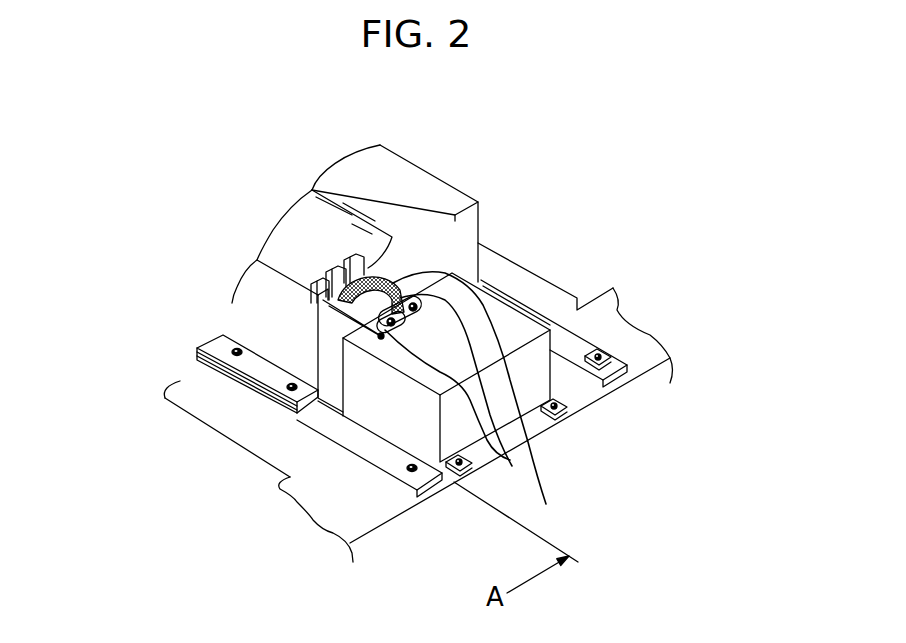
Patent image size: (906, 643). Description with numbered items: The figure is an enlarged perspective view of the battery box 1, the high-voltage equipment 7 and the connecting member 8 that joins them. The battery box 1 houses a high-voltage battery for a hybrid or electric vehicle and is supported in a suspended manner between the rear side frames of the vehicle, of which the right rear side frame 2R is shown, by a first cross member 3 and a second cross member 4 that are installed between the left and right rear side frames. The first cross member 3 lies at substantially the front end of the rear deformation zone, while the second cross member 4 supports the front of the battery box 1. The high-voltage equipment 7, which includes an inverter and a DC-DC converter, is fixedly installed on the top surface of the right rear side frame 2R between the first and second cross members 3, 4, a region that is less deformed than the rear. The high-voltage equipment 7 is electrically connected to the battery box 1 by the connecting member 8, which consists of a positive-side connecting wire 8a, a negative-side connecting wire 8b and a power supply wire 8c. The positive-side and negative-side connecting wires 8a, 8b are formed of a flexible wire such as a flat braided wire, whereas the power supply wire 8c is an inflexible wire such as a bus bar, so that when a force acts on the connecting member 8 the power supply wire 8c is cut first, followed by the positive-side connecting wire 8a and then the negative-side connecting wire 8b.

The battery box 1 is at (459, 161).
The right rear side frame 2R is at (652, 337).
The first cross member 3 is at (320, 522).
The second cross member 4 is at (592, 347).
The high-voltage equipment 7 is at (513, 322).
The connecting member 8 is at (505, 404).
The positive-side connecting wire 8a is at (487, 400).
The negative-side connecting wire 8b is at (512, 466).
The power supply wire 8c is at (546, 504).